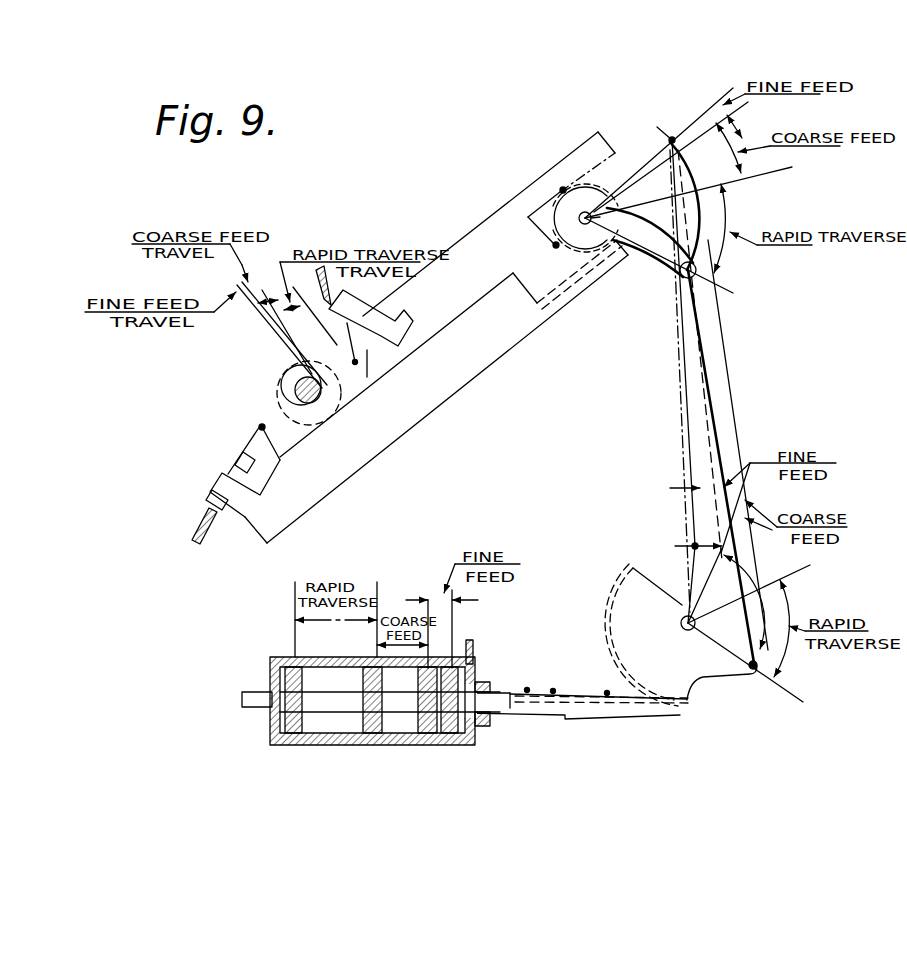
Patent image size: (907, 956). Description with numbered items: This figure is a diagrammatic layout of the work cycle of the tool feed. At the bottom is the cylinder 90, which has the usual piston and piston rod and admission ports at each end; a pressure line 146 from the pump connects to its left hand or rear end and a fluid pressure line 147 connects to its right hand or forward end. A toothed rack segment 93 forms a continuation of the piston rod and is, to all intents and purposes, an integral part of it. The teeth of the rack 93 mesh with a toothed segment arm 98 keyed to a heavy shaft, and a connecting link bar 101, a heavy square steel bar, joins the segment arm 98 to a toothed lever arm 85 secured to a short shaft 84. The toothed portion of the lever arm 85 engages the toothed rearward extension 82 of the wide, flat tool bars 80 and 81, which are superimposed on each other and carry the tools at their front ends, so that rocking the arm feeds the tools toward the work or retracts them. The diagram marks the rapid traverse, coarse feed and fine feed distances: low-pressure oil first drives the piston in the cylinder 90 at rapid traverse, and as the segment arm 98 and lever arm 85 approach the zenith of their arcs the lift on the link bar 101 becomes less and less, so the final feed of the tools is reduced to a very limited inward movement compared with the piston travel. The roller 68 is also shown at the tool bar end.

The roller 68 is at (282, 384).
The tool bar 80 is at (436, 391).
The tool bar 81 is at (489, 224).
The toothed rearward extension 82 is at (573, 158).
The short shaft 84 is at (585, 218).
The toothed lever arm 85 is at (688, 190).
The cylinder 90 is at (333, 736).
The toothed rack segment 93 is at (683, 712).
The toothed segment arm 98 is at (707, 624).
The connecting link bar 101 is at (720, 422).
The pressure line 146 is at (253, 693).
The fluid pressure line 147 is at (473, 651).